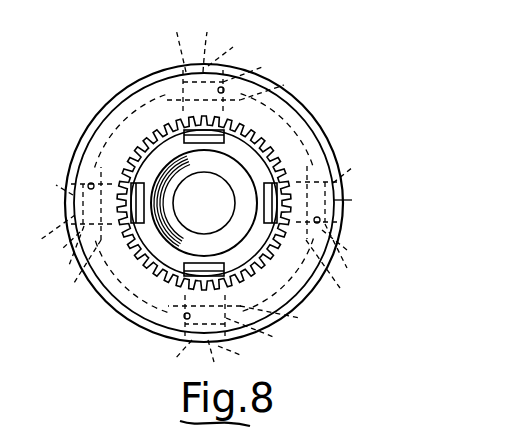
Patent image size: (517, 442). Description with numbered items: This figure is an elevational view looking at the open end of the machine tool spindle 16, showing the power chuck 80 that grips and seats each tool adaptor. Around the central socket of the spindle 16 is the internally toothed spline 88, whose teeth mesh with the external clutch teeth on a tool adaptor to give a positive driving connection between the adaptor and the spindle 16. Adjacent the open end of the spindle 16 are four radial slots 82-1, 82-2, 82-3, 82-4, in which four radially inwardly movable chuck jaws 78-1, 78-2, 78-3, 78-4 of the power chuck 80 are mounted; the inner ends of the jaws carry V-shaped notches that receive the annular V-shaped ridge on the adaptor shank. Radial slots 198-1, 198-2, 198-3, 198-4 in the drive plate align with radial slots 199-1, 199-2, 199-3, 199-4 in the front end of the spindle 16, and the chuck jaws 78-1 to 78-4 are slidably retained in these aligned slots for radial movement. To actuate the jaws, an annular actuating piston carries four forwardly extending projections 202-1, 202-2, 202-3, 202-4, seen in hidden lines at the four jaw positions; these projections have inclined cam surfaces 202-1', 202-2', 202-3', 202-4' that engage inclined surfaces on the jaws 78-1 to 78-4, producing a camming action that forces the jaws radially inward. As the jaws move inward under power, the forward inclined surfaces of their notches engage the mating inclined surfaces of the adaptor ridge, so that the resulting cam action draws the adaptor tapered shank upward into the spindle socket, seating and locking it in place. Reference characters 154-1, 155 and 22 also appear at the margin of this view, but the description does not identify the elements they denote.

The spindle 16 is at (316, 111).
The spline 88 is at (257, 252).
The power chuck 80 is at (166, 172).
The radial slot 82-1 is at (80, 178).
The radial slot 82-2 is at (153, 331).
The radial slot 82-3 is at (316, 168).
The radial slot 82-4 is at (186, 70).
The chuck jaw 78-1 is at (53, 249).
The chuck jaw 78-2 is at (250, 357).
The chuck jaw 78-3 is at (354, 246).
The chuck jaw 78-4 is at (240, 52).
The radial slot 198-1 is at (55, 254).
The radial slot 198-2 is at (276, 334).
The radial slot 198-3 is at (360, 252).
The radial slot 198-4 is at (269, 69).
The radial slot 199-1 is at (67, 268).
The radial slot 199-2 is at (294, 317).
The radial slot 199-3 is at (347, 270).
The radial slot 199-4 is at (287, 88).
The forwardly extending projection 202-1 is at (42, 217).
The inclined cam surface 202-1' is at (42, 186).
The forwardly extending projection 202-2 is at (157, 357).
The inclined cam surface 202-2' is at (222, 359).
The forwardly extending projection 202-3 is at (367, 201).
The inclined cam surface 202-3' is at (370, 169).
The forwardly extending projection 202-4 is at (229, 44).
The inclined cam surface 202-4' is at (179, 41).
The lever 154-1 is at (0, 296).
The link 155 is at (0, 332).
The frame 22 is at (11, 376).